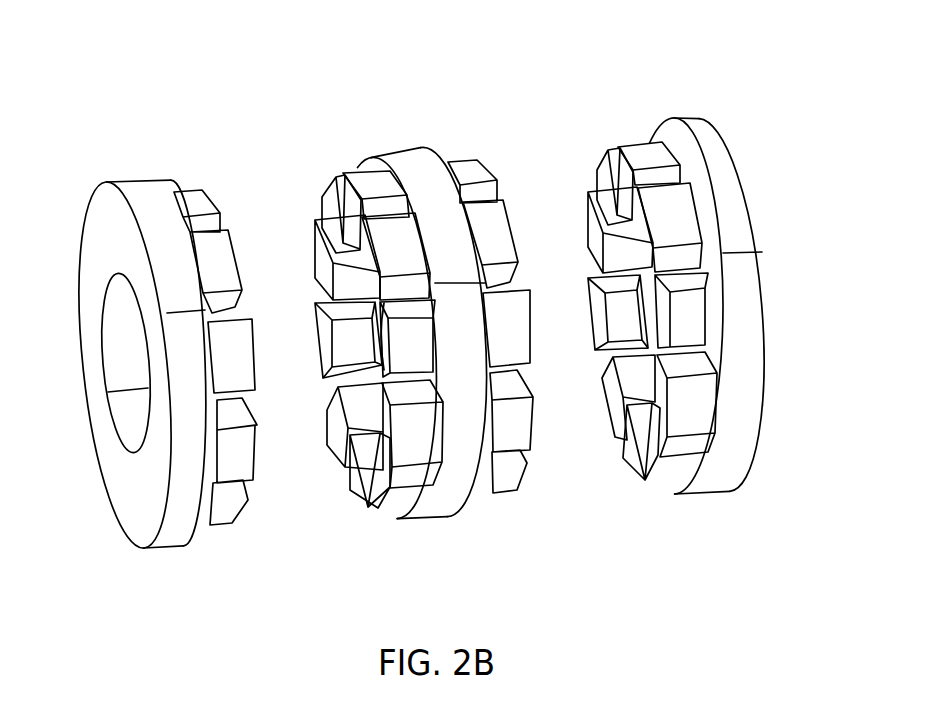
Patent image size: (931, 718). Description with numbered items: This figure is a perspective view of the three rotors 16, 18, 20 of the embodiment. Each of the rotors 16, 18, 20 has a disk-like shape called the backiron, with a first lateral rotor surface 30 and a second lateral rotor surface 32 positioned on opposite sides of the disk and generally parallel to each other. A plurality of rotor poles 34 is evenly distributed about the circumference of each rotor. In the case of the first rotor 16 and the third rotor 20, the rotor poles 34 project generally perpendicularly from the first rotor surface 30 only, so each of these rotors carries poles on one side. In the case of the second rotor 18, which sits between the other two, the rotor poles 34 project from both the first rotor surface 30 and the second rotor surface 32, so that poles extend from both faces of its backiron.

The first rotor 16 is at (137, 128).
The second rotor 18 is at (404, 100).
The third rotor 20 is at (682, 85).
The first lateral rotor surface 30 is at (207, 536).
The second lateral rotor surface 32 is at (147, 538).
The rotor poles 34 is at (240, 340).